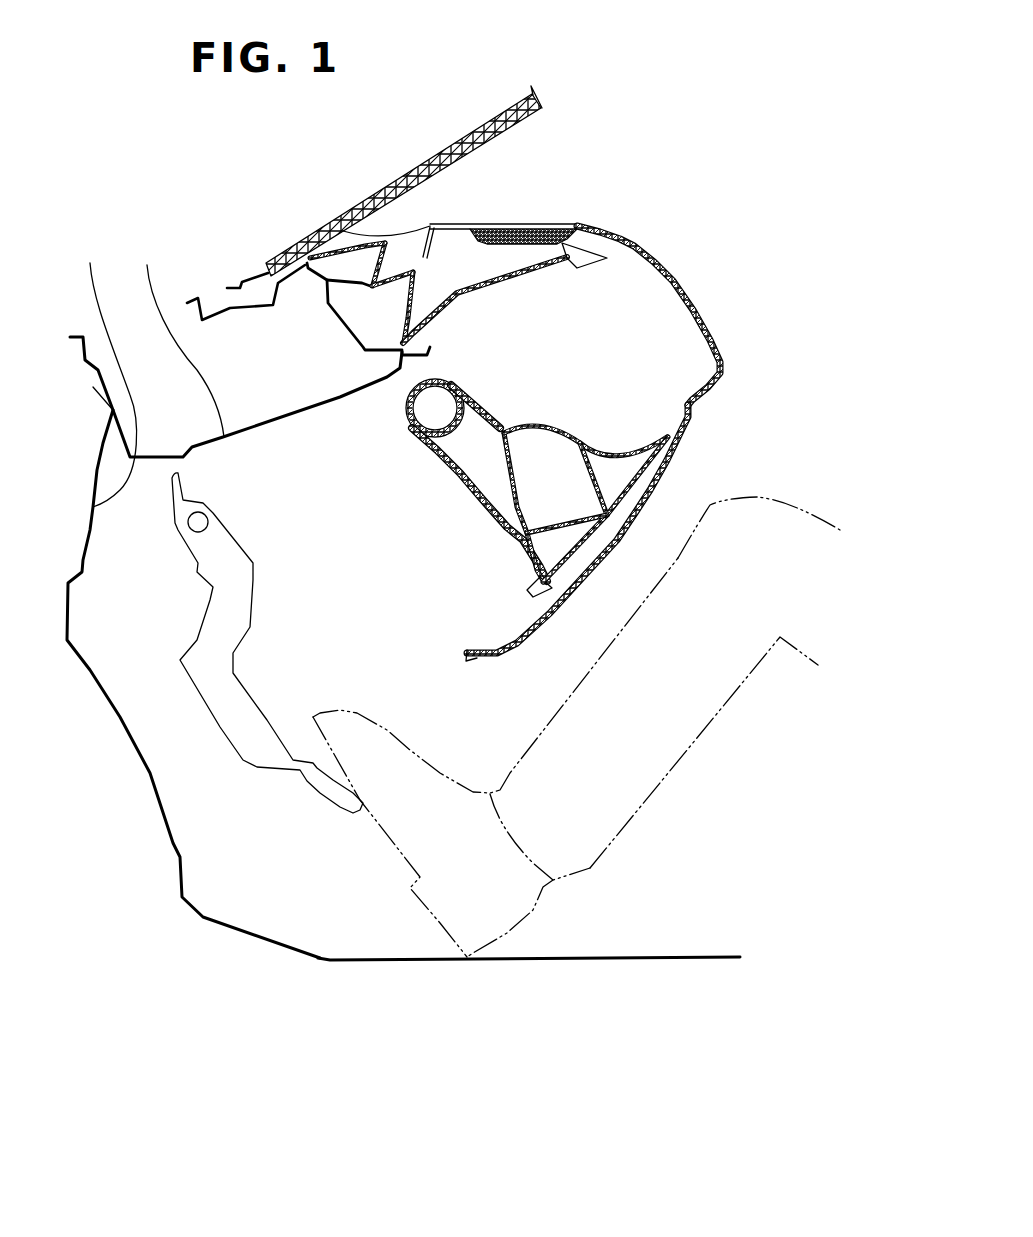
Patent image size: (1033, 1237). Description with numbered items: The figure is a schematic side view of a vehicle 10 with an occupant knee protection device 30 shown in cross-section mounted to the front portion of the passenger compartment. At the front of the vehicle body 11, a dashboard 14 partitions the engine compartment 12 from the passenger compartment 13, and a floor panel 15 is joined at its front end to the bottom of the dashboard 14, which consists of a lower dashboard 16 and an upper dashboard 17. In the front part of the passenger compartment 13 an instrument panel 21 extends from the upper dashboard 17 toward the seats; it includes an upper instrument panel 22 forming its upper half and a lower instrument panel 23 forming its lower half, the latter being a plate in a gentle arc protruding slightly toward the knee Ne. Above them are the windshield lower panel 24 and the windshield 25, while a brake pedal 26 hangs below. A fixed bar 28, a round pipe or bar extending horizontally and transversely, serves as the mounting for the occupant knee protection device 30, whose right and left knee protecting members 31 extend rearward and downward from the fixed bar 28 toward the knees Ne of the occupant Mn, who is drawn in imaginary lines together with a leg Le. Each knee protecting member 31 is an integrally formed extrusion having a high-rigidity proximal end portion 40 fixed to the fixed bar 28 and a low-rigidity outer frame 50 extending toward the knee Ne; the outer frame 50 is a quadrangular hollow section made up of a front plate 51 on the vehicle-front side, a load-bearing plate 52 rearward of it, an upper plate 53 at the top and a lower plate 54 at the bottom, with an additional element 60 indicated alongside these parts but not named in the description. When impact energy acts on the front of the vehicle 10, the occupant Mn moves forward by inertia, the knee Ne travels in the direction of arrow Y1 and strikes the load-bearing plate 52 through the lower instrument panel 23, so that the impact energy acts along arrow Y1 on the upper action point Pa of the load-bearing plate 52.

The vehicle 10 is at (745, 152).
The vehicle body 11 is at (203, 917).
The engine compartment 12 is at (65, 870).
The passenger compartment 13 is at (707, 893).
The dashboard 14 is at (148, 348).
The floor panel 15 is at (380, 960).
The lower dashboard 16 is at (108, 373).
The upper dashboard 17 is at (182, 338).
The instrument panel 21 is at (675, 443).
The upper instrument panel 22 is at (700, 317).
The lower instrument panel 23 is at (688, 420).
The windshield lower panel 24 is at (252, 277).
The windshield 25 is at (483, 125).
The brake pedal 26 is at (287, 777).
The fixed bar 28 is at (406, 410).
The occupant knee protection device 30 is at (489, 478).
The knee protecting member 31 is at (431, 491).
The proximal end portion 40 is at (458, 478).
The outer frame 50 is at (480, 513).
The front plate 51 is at (510, 433).
The load-bearing plate 52 is at (580, 557).
The upper plate 53 is at (600, 442).
The lower plate 54 is at (527, 543).
The reinforcing member 60 is at (485, 522).
The upper action point Pa is at (633, 510).
The arrow Y1 is at (660, 503).
The knee Ne is at (757, 497).
The occupant Mn is at (852, 521).
The leg Le is at (687, 757).